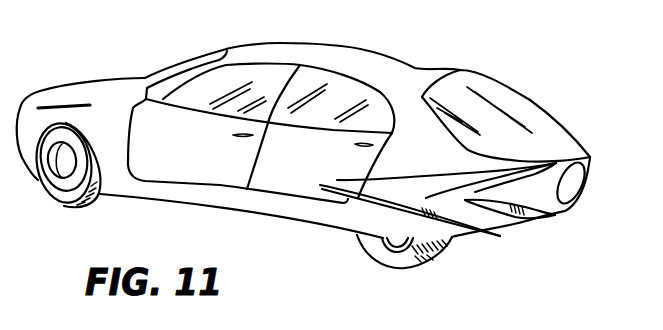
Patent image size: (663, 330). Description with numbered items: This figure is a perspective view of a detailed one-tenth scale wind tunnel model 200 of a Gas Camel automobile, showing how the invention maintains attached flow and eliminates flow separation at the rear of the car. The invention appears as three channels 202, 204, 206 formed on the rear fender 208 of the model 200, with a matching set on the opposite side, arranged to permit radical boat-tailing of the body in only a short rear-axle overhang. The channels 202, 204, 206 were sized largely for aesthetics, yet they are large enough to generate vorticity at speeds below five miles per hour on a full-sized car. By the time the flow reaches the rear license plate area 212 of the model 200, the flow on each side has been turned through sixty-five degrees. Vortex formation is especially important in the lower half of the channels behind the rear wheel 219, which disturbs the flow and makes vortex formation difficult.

The wind tunnel model 200 is at (432, 66).
The channel 202 is at (400, 193).
The channel 204 is at (465, 196).
The channel 206 is at (525, 197).
The rear fender 208 is at (447, 164).
The rear license plate area 212 is at (568, 190).
The rear wheel 219 is at (410, 268).